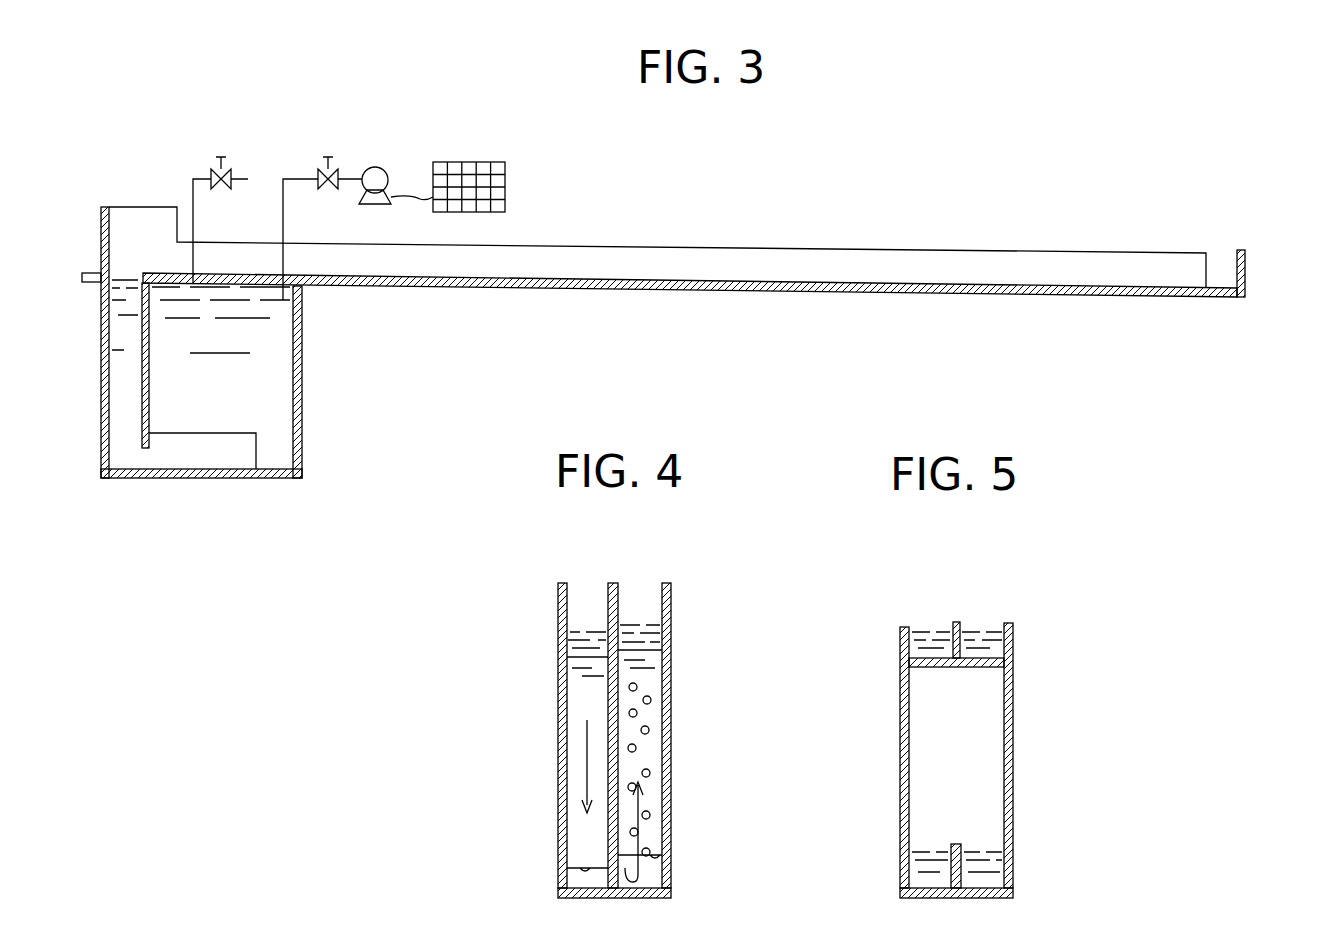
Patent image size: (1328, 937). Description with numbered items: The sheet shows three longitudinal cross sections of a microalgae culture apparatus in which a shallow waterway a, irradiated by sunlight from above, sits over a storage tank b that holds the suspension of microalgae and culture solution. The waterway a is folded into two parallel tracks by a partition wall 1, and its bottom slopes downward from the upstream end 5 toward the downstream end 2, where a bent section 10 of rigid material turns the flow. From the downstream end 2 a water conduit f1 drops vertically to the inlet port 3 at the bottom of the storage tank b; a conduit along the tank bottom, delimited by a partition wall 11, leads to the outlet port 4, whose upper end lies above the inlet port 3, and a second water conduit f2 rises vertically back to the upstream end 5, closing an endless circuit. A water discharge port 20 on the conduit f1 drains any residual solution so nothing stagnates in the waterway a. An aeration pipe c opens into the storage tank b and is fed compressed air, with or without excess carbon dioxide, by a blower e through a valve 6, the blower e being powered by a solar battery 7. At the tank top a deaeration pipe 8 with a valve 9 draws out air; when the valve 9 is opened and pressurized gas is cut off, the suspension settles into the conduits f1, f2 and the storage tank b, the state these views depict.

In FIG. 3, the partition wall 1 is at (935, 250).
In FIG. 4, the partition wall 1 is at (615, 583).
In FIG. 5, the partition wall 1 is at (957, 622).
In FIG. 4, the downstream end 2 is at (587, 657).
In FIG. 4, the inlet port 3 is at (580, 867).
In FIG. 4, the outlet port 4 is at (667, 865).
In FIG. 4, the upstream end 5 is at (640, 648).
In FIG. 3, the valve 6 is at (330, 168).
In FIG. 3, the solar battery 7 is at (485, 160).
In FIG. 3, the deaeration pipe 8 is at (193, 217).
In FIG. 3, the valve 9 is at (223, 168).
In FIG. 3, the bent section 10 is at (1243, 250).
In FIG. 5, the partition wall 11 is at (960, 872).
In FIG. 3, the water discharge port 20 is at (88, 272).
In FIG. 3, the waterway a is at (720, 293).
In FIG. 3, the storage tank b is at (260, 353).
In FIG. 5, the storage tank b is at (957, 767).
In FIG. 3, the aeration pipe c is at (283, 217).
In FIG. 3, the blower e is at (386, 175).
In FIG. 4, the water conduit f1 is at (573, 743).
In FIG. 3, the water conduit f2 is at (102, 400).
In FIG. 4, the water conduit f2 is at (637, 735).